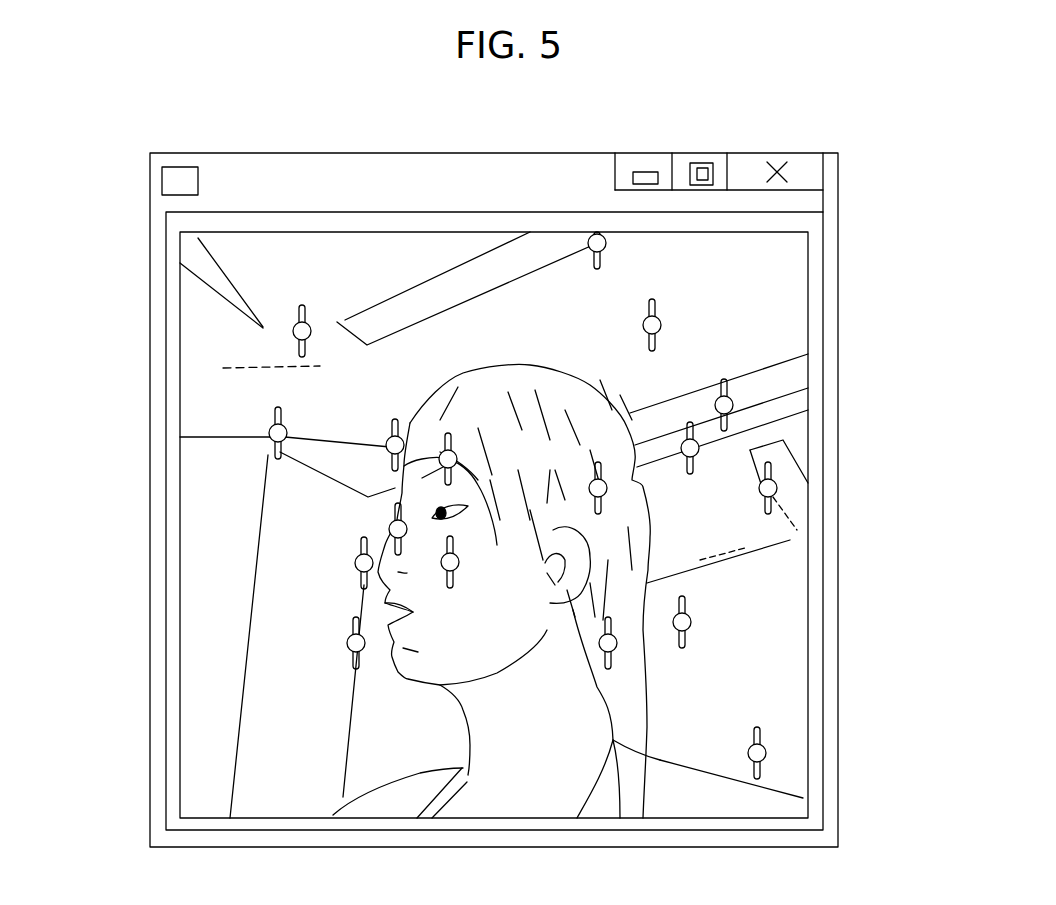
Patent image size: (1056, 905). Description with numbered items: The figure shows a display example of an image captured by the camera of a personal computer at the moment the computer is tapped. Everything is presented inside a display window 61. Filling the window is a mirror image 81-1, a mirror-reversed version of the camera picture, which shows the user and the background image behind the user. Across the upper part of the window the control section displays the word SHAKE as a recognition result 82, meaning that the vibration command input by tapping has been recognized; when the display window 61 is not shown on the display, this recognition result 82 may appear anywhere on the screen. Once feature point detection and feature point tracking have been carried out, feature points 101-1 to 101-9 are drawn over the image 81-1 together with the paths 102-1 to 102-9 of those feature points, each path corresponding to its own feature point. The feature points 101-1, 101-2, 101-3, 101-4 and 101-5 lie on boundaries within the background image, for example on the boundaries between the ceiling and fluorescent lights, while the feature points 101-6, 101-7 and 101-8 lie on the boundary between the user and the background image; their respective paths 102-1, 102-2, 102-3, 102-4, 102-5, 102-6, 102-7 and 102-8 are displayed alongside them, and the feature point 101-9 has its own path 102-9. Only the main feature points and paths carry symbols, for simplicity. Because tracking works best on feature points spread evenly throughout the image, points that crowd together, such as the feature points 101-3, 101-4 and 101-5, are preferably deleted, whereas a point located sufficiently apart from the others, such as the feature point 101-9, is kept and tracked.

The display window 61 is at (150, 183).
The mirror image 81-1 is at (775, 270).
The recognition result 82 is at (385, 270).
The feature point 101-1 is at (294, 331).
The feature point 101-2 is at (598, 235).
The feature point 101-3 is at (731, 406).
The feature point 101-4 is at (698, 447).
The feature point 101-5 is at (776, 487).
The feature point 101-6 is at (390, 448).
The feature point 101-7 is at (357, 565).
The feature point 101-8 is at (616, 645).
The feature point 101-9 is at (270, 433).
The path 102-1 is at (300, 352).
The path 102-2 is at (604, 258).
The path 102-3 is at (728, 425).
The path 102-4 is at (694, 466).
The path 102-5 is at (772, 505).
The path 102-6 is at (393, 470).
The path 102-7 is at (358, 587).
The path 102-8 is at (614, 663).
The path 102-9 is at (272, 452).